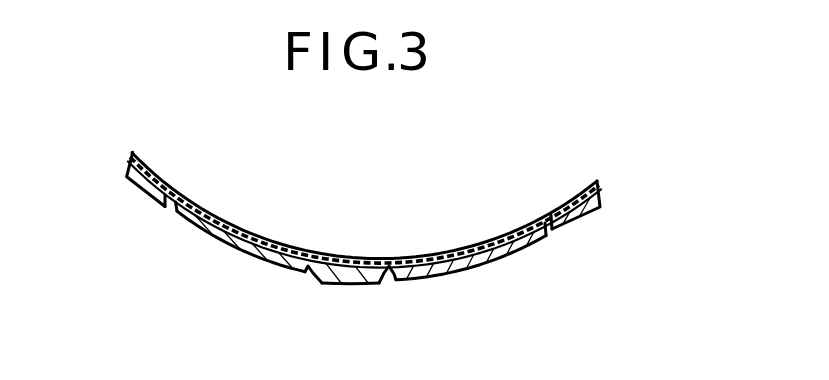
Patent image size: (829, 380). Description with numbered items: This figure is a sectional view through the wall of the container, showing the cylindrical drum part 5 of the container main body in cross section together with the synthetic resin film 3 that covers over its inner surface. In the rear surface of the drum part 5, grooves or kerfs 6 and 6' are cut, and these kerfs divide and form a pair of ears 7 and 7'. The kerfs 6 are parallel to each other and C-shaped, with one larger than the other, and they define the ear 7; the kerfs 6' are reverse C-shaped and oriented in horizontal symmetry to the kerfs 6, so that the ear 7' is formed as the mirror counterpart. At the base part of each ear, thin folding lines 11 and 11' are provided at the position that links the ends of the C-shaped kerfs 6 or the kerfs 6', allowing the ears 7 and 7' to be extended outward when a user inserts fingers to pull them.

The synthetic resin film 3 is at (217, 218).
The cylindrical drum part 5 is at (143, 183).
The kerf 6 is at (156, 254).
The ear 7 is at (361, 282).
The ear 7' is at (538, 268).
The kerf 6' is at (567, 269).
The thin folding line 11 is at (304, 314).
The thin folding line 11' is at (382, 314).